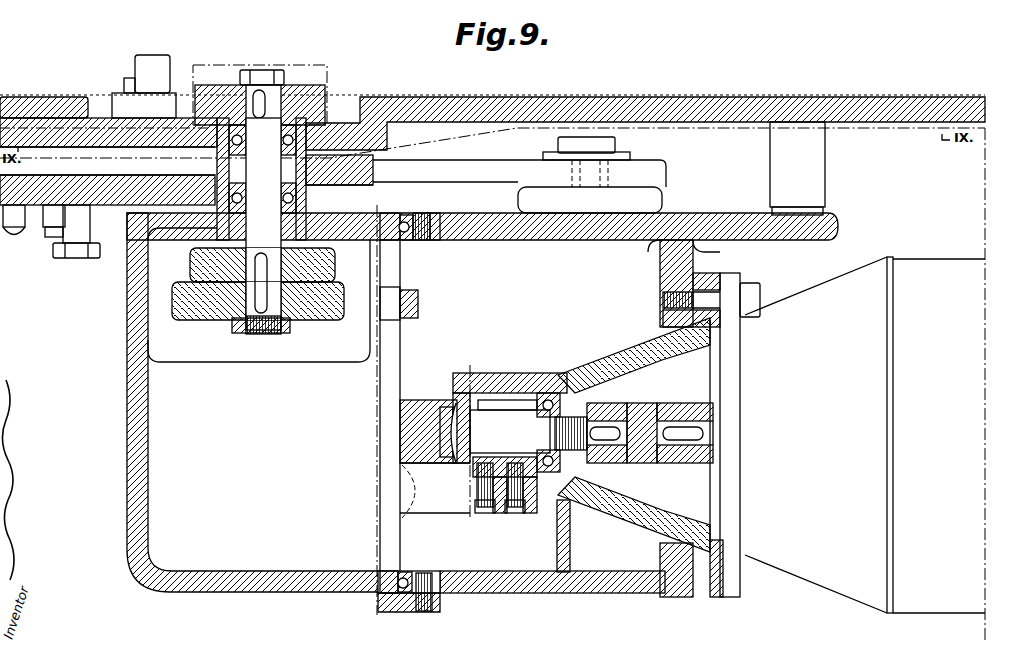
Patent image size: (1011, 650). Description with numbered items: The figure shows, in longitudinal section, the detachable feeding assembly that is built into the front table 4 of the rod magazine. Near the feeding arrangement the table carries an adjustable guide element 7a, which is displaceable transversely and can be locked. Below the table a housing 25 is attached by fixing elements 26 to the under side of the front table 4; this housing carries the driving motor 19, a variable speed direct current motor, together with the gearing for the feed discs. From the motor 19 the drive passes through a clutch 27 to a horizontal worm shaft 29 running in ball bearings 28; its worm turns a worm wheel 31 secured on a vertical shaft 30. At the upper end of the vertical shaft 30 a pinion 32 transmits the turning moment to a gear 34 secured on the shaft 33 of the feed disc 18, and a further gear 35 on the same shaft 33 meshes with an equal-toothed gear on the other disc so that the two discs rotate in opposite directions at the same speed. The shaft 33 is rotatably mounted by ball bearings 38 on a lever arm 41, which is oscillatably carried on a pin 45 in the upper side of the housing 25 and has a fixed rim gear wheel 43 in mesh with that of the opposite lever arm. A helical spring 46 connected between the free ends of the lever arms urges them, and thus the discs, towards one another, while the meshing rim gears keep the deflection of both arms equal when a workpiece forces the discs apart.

The front table 4 is at (97, 110).
The guide element 7a is at (140, 62).
The circular disc 18 is at (322, 96).
The driving motor 19 is at (930, 612).
The housing 25 is at (128, 468).
The fixing elements 26 is at (100, 165).
The clutch 27 is at (633, 403).
The ball bearings 28 is at (545, 395).
The horizontal worm shaft 29 is at (502, 515).
The vertical shaft 30 is at (396, 354).
The worm wheel 31 is at (428, 408).
The pinion 32 is at (418, 302).
The shaft of the feed disc 33 is at (283, 333).
The gear 34 is at (333, 320).
The gear 35 is at (312, 275).
The ball bearings 38 is at (244, 150).
The lever arm 41 is at (322, 186).
The rim gear wheel 43 is at (662, 200).
The pin 45 is at (590, 241).
The helical spring 46 is at (15, 240).